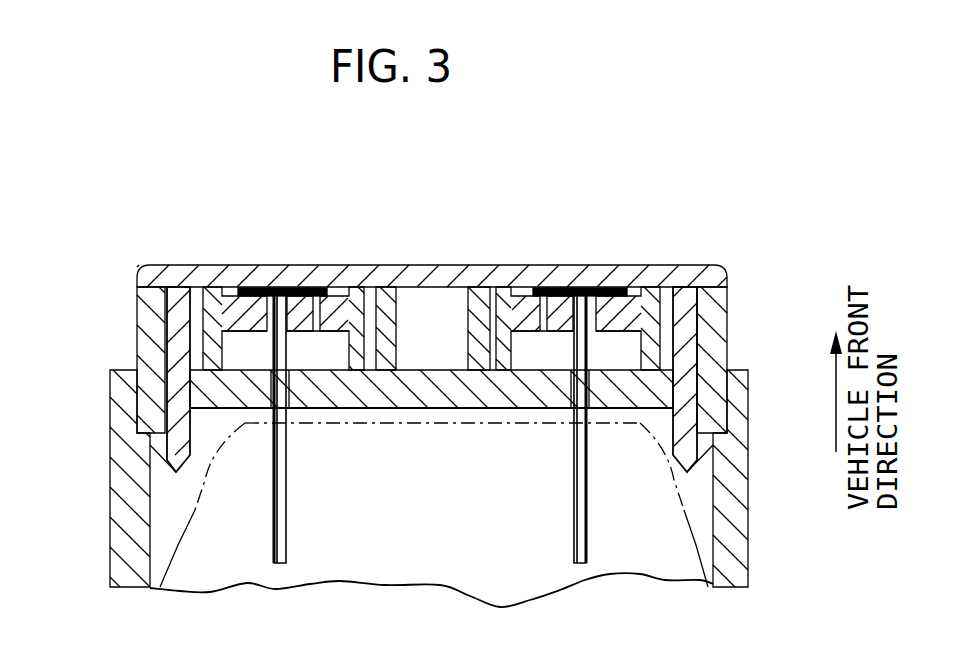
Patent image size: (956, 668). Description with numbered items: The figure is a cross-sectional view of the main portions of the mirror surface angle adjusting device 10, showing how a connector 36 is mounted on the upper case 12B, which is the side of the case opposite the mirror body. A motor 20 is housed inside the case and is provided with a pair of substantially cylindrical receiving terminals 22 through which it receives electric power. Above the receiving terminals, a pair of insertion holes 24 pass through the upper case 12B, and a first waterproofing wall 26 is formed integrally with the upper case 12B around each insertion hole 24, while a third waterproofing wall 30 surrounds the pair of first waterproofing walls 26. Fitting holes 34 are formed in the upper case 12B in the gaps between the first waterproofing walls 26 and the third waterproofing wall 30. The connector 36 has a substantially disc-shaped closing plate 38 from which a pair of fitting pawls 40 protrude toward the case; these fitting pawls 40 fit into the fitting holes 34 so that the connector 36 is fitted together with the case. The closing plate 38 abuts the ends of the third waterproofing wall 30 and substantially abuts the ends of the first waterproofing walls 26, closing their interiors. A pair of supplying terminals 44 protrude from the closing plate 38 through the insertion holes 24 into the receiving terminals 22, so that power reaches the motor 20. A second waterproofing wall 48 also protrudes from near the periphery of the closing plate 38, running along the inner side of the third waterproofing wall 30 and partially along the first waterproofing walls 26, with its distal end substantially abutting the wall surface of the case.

The mirror surface angle adjusting device 10 is at (100, 230).
The upper case 12B is at (108, 551).
The motor 20 is at (738, 530).
The receiving terminal 22 is at (286, 512).
The insertion hole 24 is at (300, 410).
The first waterproofing wall 26 is at (210, 300).
The third waterproofing wall 30 is at (137, 295).
The fitting hole 34 is at (190, 410).
The connector 36 is at (737, 263).
The closing plate 38 is at (357, 265).
The fitting pawl 40 is at (150, 465).
The supplying terminal 44 is at (289, 346).
The second waterproofing wall 48 is at (178, 300).